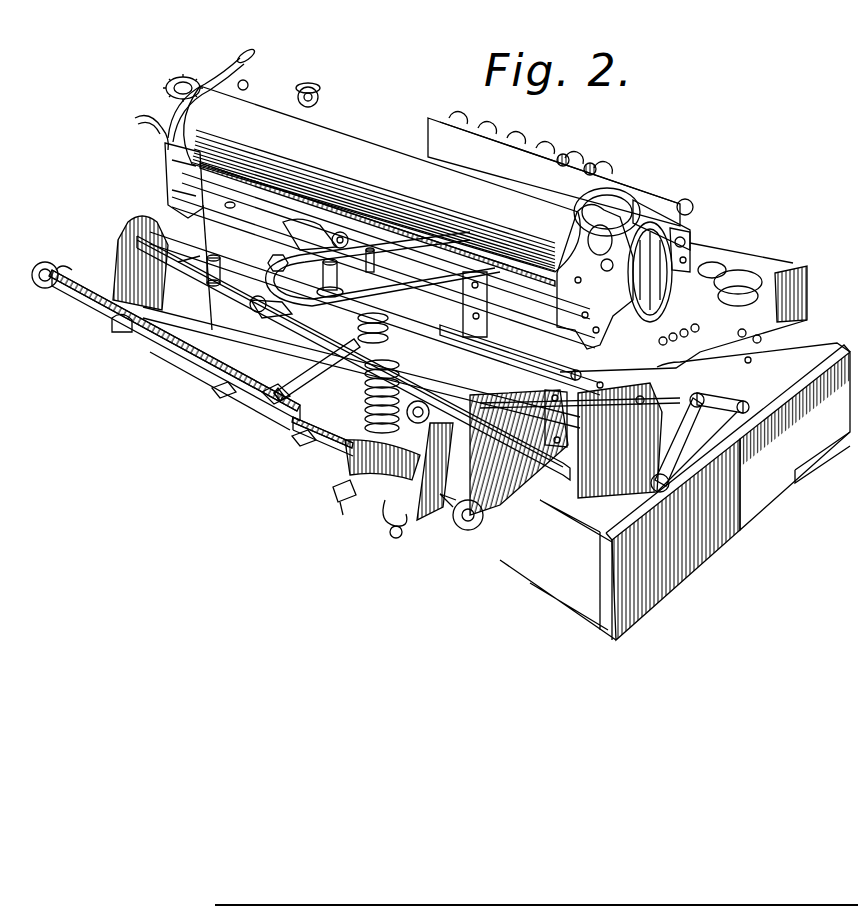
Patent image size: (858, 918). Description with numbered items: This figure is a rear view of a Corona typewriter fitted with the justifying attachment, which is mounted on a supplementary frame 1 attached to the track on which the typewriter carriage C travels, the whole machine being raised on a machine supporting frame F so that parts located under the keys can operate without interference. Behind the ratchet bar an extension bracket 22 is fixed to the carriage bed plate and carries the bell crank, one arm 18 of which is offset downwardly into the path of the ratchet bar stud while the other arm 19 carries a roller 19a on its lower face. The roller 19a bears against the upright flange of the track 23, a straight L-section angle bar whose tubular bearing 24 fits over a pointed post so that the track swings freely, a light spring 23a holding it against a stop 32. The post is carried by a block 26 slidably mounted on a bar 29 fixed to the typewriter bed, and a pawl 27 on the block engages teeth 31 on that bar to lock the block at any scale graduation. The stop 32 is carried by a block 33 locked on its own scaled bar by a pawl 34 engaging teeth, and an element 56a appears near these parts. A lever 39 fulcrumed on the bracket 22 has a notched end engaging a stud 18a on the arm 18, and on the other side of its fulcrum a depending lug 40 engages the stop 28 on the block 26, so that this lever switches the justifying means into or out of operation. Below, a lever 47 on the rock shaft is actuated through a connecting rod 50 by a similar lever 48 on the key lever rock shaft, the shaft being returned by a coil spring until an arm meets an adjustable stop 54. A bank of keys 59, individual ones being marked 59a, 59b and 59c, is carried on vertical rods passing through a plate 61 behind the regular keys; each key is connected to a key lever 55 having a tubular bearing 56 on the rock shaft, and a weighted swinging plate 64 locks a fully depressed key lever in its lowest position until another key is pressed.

The stop 28 is at (224, 266).
The lug 40 is at (300, 262).
The lever 39 is at (368, 246).
The stud 18a is at (390, 222).
The bell crank arm 18 is at (440, 257).
The extension bracket 22 is at (482, 250).
The key plate bump 59c is at (470, 128).
The key plate bump 59b is at (560, 148).
The keys 59 is at (652, 184).
The plate end knob 59a is at (690, 200).
The plate 61 is at (694, 250).
The bar 29 is at (178, 240).
The supplementary frame 1 is at (122, 226).
The teeth 31 is at (205, 265).
The tubular bearing 24 is at (178, 264).
The key lever 55 is at (45, 290).
The tubular bearing 56 is at (82, 302).
The block 26 is at (120, 330).
The spring 23a is at (165, 338).
The pawl 27 is at (185, 358).
The roller 19a is at (255, 308).
The bell crank arm 19 is at (290, 300).
The lug 56a is at (296, 440).
The block 33 is at (248, 396).
The stop 32 is at (262, 402).
The pawl 34 is at (276, 408).
The adjustable stop 54 is at (340, 492).
The lever 47 is at (430, 520).
The track 23 is at (492, 460).
The carriage C is at (585, 335).
The connecting rod 50 is at (560, 361).
The swinging plate 64 is at (722, 402).
The lever 48 is at (682, 447).
The machine supporting frame F is at (733, 500).